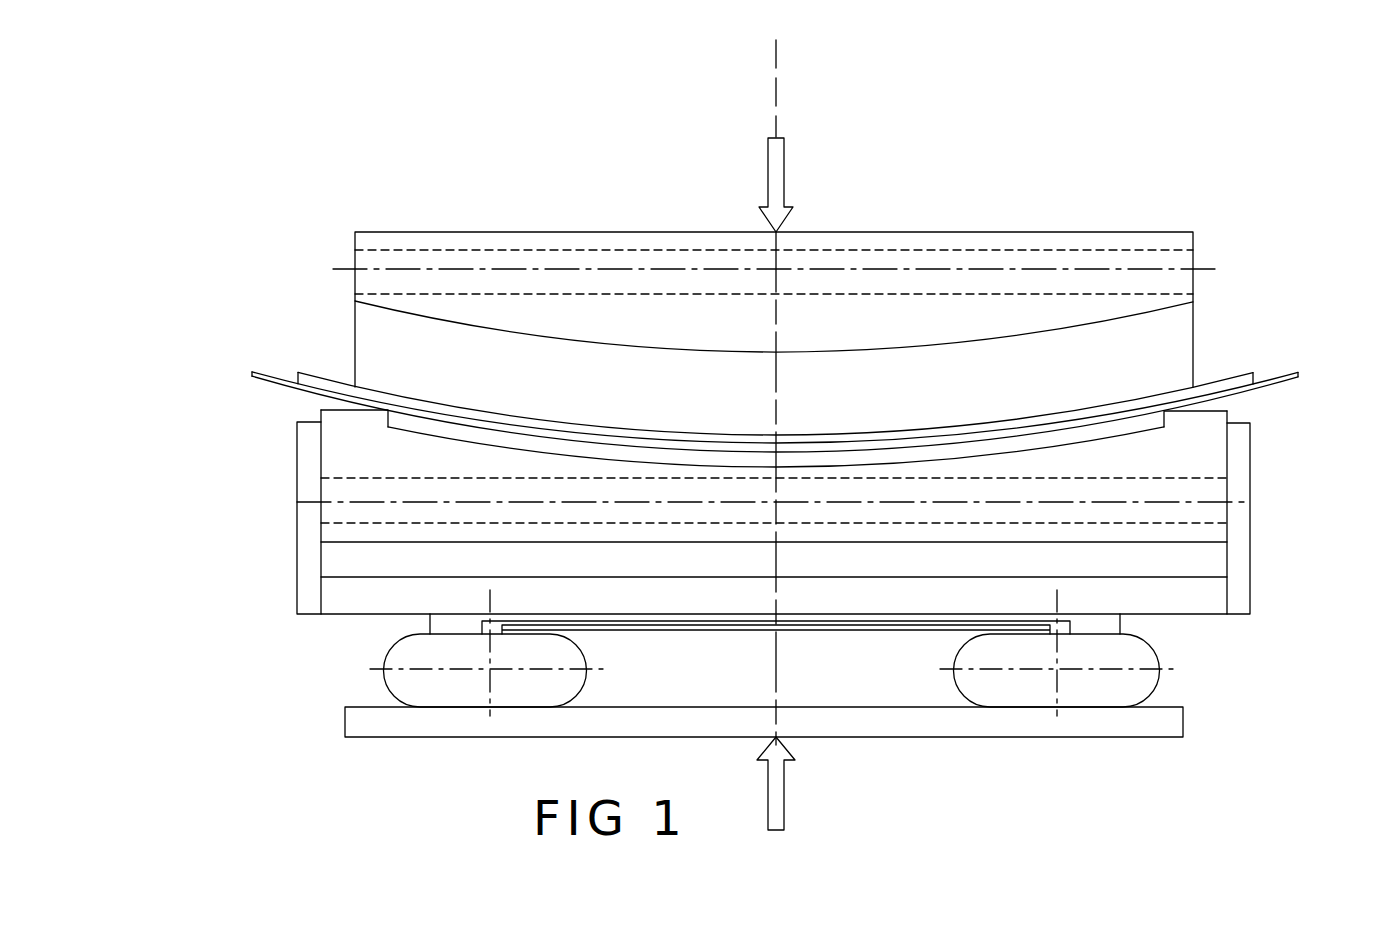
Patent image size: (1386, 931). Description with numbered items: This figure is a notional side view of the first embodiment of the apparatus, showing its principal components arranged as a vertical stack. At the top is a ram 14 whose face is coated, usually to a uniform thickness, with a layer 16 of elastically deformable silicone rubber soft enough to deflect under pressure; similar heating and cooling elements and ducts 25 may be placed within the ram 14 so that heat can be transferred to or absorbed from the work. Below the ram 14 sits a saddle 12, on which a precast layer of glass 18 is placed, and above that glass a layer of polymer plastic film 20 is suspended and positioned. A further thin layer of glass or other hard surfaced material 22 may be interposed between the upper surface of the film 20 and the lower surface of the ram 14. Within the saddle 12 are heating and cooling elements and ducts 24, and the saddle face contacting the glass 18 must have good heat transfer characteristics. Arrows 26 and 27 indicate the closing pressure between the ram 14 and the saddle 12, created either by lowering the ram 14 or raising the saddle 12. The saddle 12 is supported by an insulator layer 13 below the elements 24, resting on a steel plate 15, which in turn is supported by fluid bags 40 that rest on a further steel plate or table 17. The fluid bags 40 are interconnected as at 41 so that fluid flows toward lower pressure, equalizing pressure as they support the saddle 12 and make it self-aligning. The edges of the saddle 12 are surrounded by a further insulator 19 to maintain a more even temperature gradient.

The saddle 12 is at (318, 436).
The insulator layer 13 is at (1238, 552).
The ram 14 is at (1163, 228).
The steel plate 15 is at (1232, 597).
The layer of elastically deformable material 16 is at (1183, 350).
The steel plate or table 17 is at (1192, 735).
The precast layer of glass 18 is at (1110, 437).
The insulator 19 is at (1258, 426).
The layer of polymer plastic film 20 is at (253, 360).
The thin layer of glass or other hard surfaced material 22 is at (300, 362).
The heating and cooling elements and ducts 24 is at (312, 500).
The heating and cooling elements and ducts 25 is at (1020, 265).
The arrow 26 is at (752, 176).
The arrow 27 is at (795, 792).
The fluid bags 40 is at (398, 656).
The interconnection 41 is at (850, 635).